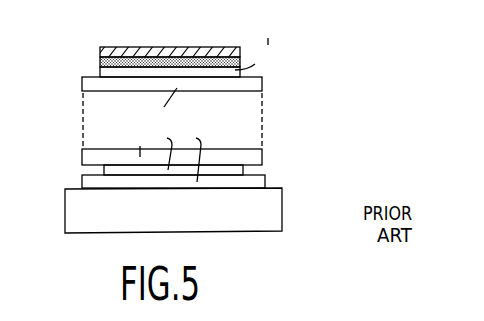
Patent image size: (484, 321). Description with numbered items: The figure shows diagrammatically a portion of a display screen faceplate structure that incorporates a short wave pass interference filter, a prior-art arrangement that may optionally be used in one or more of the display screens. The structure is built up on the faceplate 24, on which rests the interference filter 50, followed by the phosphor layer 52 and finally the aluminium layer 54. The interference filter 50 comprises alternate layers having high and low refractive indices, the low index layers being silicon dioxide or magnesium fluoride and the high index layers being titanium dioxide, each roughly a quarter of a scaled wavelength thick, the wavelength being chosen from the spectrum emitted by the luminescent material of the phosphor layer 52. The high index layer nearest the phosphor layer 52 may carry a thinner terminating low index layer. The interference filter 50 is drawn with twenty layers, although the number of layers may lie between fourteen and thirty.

The faceplate 24 is at (257, 212).
The interference filter 50 is at (217, 103).
The phosphor layer 52 is at (172, 57).
The aluminium layer 54 is at (133, 47).